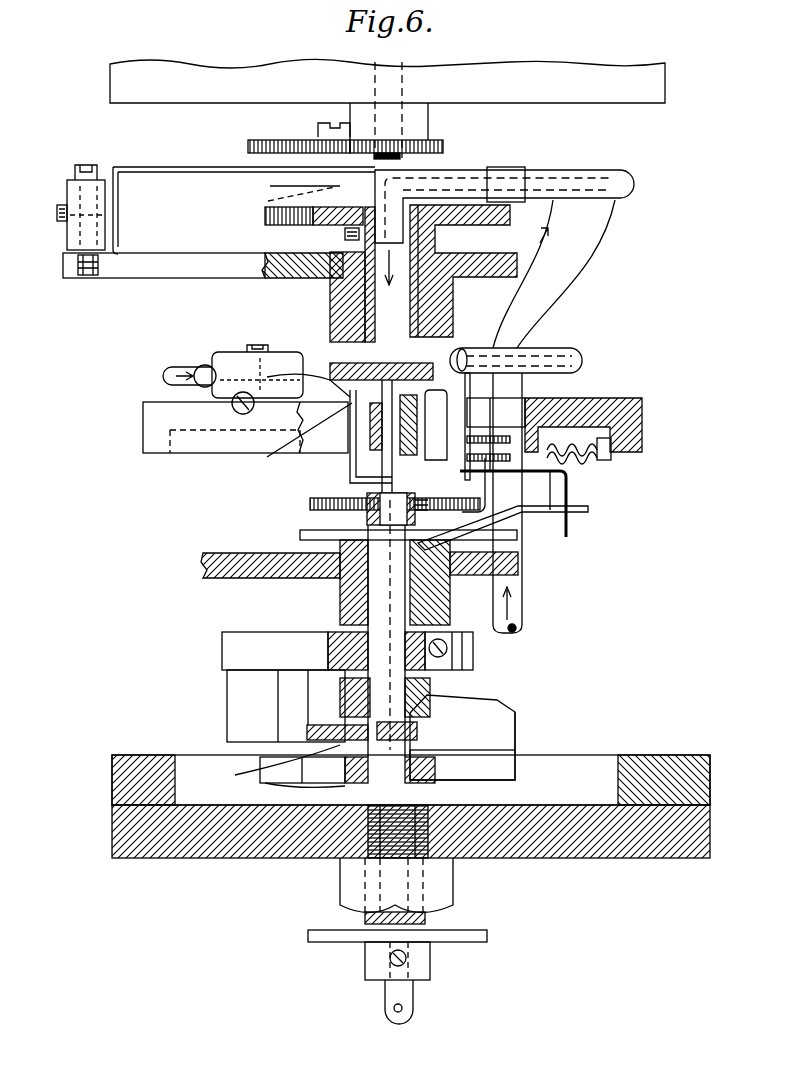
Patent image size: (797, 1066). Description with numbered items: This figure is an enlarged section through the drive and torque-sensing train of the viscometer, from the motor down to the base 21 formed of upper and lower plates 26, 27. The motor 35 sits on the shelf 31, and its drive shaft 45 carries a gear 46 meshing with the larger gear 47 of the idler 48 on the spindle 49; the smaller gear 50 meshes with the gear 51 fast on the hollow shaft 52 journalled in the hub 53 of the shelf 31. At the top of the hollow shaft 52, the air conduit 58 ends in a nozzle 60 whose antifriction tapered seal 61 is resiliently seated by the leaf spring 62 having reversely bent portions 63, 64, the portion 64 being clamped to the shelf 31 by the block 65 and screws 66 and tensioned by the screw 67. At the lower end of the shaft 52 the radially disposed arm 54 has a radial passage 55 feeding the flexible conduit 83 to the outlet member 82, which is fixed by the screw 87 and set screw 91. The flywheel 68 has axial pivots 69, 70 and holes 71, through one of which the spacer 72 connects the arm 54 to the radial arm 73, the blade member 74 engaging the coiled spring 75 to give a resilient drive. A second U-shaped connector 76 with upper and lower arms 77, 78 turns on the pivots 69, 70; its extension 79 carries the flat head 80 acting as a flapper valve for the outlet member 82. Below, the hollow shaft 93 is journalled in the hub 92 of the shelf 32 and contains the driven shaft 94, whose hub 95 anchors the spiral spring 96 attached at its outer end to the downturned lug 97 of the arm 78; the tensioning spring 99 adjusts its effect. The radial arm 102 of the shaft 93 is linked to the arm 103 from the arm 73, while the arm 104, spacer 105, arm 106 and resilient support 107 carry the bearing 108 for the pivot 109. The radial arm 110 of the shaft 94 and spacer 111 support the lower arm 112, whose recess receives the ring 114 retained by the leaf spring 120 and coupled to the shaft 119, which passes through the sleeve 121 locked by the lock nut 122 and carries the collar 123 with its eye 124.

The base 21 is at (100, 822).
The upper plate 26 is at (712, 772).
The lower plate 27 is at (712, 826).
The shelf 31 is at (128, 278).
The shelf 32 is at (205, 565).
The motor 35 is at (285, 60).
The drive shaft 45 is at (392, 88).
The gear 46 is at (440, 142).
The larger gear 47 is at (262, 140).
The idler 48 is at (287, 186).
The spindle 49 is at (283, 199).
The smaller gear 50 is at (265, 220).
The gear 51 is at (478, 225).
The hollow shaft 52 is at (365, 316).
The hub 53 is at (330, 298).
The radially disposed arm 54 is at (462, 347).
The radial passage 55 is at (455, 312).
The conduit 58 is at (515, 310).
The nozzle 60 is at (410, 190).
The antifriction tapered seal 61 is at (345, 236).
The leaf spring 62 is at (220, 167).
The reversely bent portion 63 is at (118, 186).
The reversely bent portion 64 is at (78, 254).
The block 65 is at (67, 190).
The screws 66 is at (83, 158).
The screw 67 is at (57, 218).
The flywheel 68 is at (143, 425).
The axial pivot 69 is at (323, 413).
The axial pivot 70 is at (370, 484).
The holes 71 is at (540, 410).
The spacer 72 is at (470, 402).
The radial arm 73 is at (567, 494).
The blade member 74 is at (597, 455).
The coiled spring 75 is at (612, 445).
The U-shaped connector 76 is at (350, 441).
The upper arm 77 is at (299, 442).
The lower arm 78 is at (428, 512).
The radially disposed extension 79 is at (332, 362).
The flat head 80 is at (245, 356).
The outlet member 82 is at (202, 365).
The flexible conduit 83 is at (172, 372).
The screw 87 is at (238, 414).
The set screw 91 is at (258, 345).
The hub 92 is at (340, 599).
The hollow shaft 93 is at (345, 536).
The driven shaft 94 is at (395, 598).
The hub 95 is at (367, 515).
The spiral spring 96 is at (310, 504).
The downturned lug 97 is at (473, 493).
The tensioning spring 99 is at (457, 605).
The radial arm 102 is at (540, 520).
The arm 103 is at (567, 476).
The arm 104 is at (222, 652).
The spacer 105 is at (227, 694).
The arm 106 is at (330, 728).
The resilient support 107 is at (272, 763).
The bearing 108 is at (418, 730).
The pivot 109 is at (430, 712).
The radial arm 110 is at (440, 690).
The spacer 111 is at (516, 735).
The lower arm 112 is at (480, 771).
The ring 114 is at (346, 770).
The shaft 119 is at (425, 800).
The leaf spring 120 is at (300, 790).
The sleeve 121 is at (322, 858).
The lock nut 122 is at (440, 892).
The collar 123 is at (430, 961).
The eye 124 is at (385, 1015).